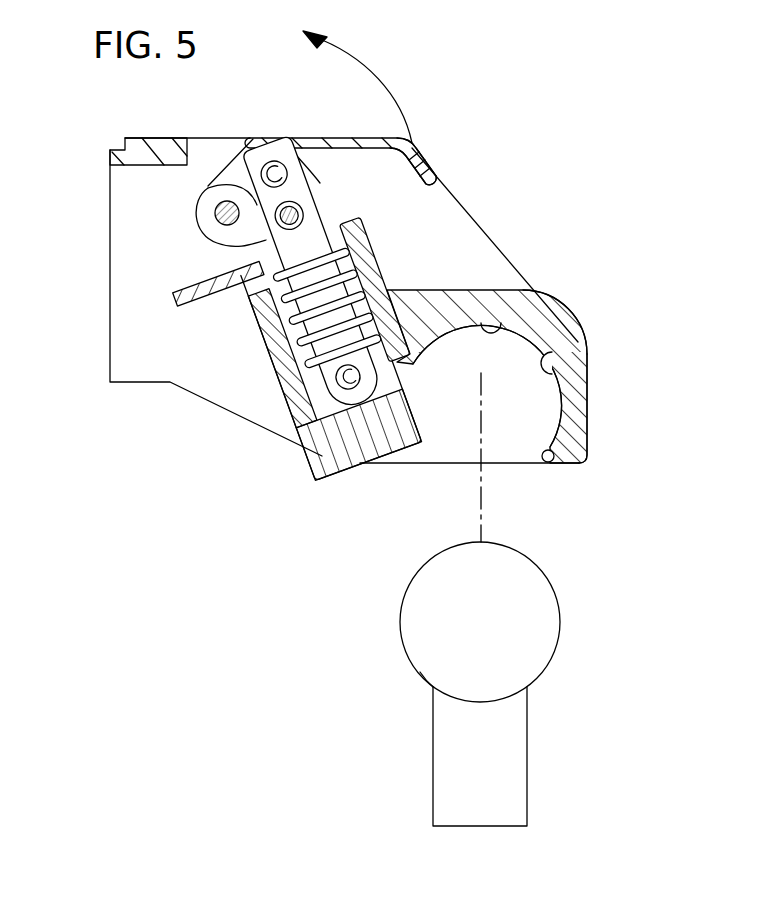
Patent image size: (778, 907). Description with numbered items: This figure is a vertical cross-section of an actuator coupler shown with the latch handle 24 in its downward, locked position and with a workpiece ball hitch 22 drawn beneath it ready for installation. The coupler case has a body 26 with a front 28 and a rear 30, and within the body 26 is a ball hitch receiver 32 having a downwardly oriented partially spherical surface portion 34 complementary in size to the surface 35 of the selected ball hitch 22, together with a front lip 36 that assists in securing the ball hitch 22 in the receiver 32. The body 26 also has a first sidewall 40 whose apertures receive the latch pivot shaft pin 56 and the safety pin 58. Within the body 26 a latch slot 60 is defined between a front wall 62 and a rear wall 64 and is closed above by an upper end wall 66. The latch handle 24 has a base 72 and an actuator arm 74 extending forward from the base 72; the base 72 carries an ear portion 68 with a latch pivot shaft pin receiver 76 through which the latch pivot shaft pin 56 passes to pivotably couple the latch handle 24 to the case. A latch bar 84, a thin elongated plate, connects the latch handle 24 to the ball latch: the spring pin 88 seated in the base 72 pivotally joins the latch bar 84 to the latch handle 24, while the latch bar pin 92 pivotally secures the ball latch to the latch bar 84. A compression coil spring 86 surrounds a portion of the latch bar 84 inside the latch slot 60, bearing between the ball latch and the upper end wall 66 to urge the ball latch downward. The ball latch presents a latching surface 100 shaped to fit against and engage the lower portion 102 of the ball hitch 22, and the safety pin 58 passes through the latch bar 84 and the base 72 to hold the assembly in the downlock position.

The ball hitch 22 is at (524, 665).
The latch handle 24 is at (357, 138).
The body 26 is at (578, 324).
The front 28 is at (588, 420).
The rear 30 is at (110, 247).
The ball hitch receiver 32 is at (545, 305).
The partially spherical surface portion 34 is at (556, 367).
The surface 35 is at (551, 582).
The front lip 36 is at (550, 470).
The first sidewall 40 is at (468, 220).
The latch pivot shaft pin 56 is at (210, 230).
The safety pin 58 is at (292, 215).
The latch slot 60 is at (327, 402).
The front wall 62 is at (395, 290).
The rear wall 64 is at (262, 312).
The upper end wall 66 is at (245, 266).
The ear portion 68 is at (320, 183).
The base 72 is at (232, 177).
The actuator arm 74 is at (437, 166).
The latch pivot shaft pin receiver 76 is at (225, 187).
The latch bar 84 is at (368, 243).
The spring 86 is at (302, 320).
The spring pin 88 is at (297, 146).
The latch bar pin 92 is at (363, 379).
The latching surface 100 is at (413, 427).
The lower portion 102 is at (418, 668).